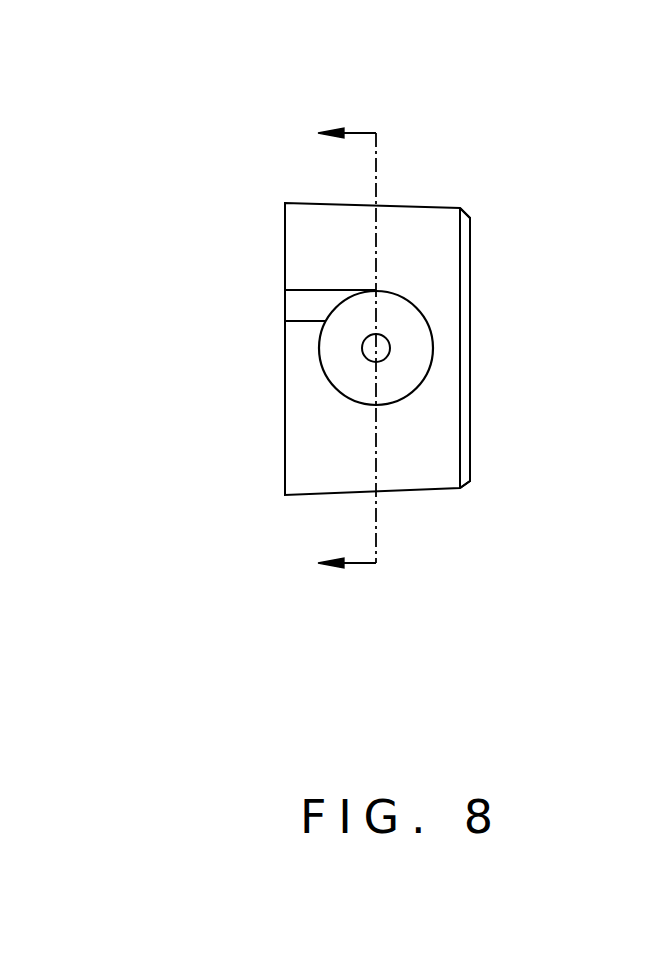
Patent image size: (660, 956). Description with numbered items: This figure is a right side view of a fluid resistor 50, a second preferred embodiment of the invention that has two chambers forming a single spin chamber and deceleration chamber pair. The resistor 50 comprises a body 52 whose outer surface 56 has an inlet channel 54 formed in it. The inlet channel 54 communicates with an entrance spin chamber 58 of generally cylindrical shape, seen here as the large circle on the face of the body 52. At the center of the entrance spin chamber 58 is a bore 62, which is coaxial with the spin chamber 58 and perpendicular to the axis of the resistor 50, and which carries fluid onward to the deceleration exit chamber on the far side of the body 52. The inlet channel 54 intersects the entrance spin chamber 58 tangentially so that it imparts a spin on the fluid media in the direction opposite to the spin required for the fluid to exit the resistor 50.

The resistor 50 is at (367, 334).
The body 52 is at (320, 475).
The inlet channel 54 is at (300, 303).
The outer surface 56 is at (430, 490).
The entrance spin chamber 58 is at (408, 330).
The bore 62 is at (390, 350).